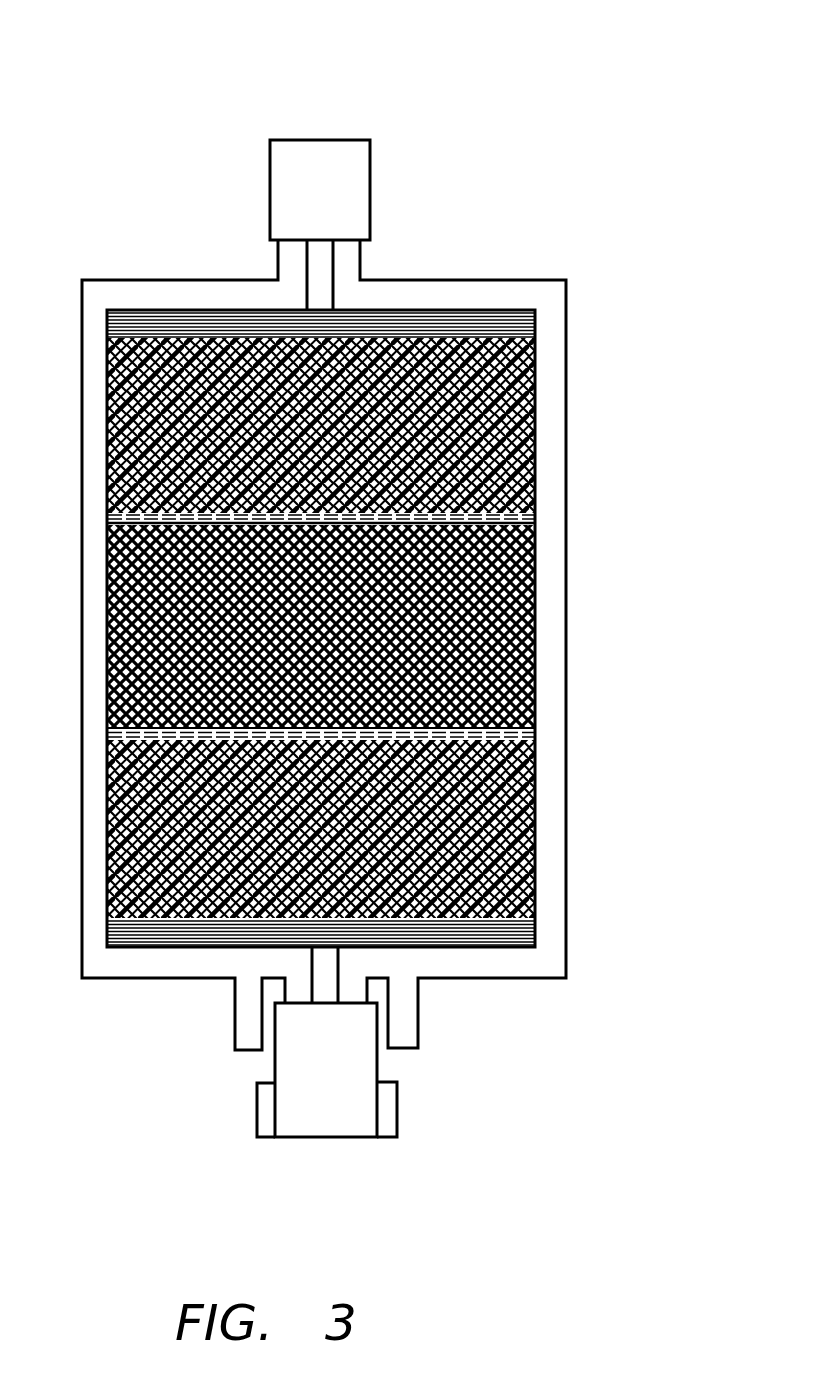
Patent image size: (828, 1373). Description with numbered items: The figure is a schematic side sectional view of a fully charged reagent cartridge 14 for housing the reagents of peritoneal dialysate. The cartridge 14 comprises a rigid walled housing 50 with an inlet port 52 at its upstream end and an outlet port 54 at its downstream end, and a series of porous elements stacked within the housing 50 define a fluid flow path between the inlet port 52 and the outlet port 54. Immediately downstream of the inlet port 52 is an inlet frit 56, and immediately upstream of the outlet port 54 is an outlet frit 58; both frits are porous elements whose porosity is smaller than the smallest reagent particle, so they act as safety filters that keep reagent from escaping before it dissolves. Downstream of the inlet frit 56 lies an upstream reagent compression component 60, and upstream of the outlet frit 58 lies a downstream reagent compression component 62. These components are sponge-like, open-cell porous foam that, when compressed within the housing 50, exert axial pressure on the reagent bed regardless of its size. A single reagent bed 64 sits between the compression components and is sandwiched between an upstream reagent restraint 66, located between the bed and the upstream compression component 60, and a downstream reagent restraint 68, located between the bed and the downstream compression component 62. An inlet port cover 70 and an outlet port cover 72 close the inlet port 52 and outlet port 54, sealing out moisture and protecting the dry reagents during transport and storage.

The reagent cartridge 14 is at (436, 42).
The rigid walled housing 50 is at (556, 567).
The inlet port 52 is at (322, 272).
The outlet port 54 is at (330, 978).
The inlet frit 56 is at (462, 308).
The outlet frit 58 is at (535, 927).
The upstream reagent compression component 60 is at (533, 363).
The downstream reagent compression component 62 is at (535, 778).
The reagent bed 64 is at (528, 602).
The upstream reagent restraint 66 is at (535, 502).
The downstream reagent restraint 68 is at (535, 718).
The inlet port cover 70 is at (298, 170).
The outlet port cover 72 is at (340, 1072).